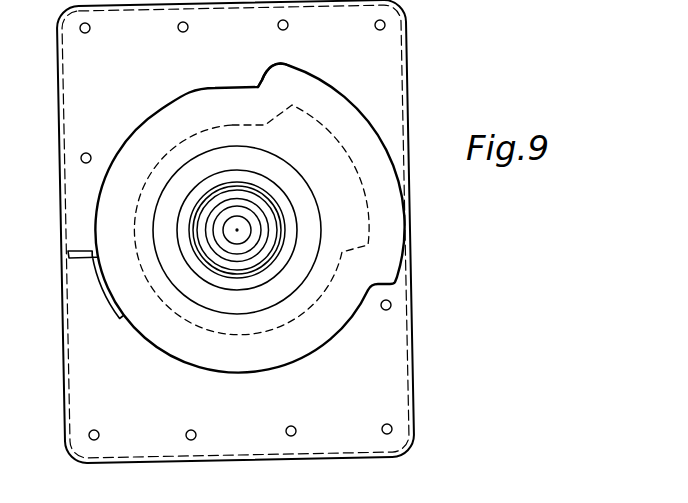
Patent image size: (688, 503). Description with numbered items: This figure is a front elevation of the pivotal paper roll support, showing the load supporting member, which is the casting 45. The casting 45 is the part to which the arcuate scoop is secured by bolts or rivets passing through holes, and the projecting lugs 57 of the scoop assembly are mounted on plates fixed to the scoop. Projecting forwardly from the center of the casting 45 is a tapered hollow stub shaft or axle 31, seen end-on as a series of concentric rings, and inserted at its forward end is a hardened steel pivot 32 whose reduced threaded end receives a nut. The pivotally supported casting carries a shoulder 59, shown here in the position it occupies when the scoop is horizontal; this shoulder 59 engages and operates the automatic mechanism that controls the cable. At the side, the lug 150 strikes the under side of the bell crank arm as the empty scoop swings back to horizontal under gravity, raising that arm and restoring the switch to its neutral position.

The casting 45 is at (397, 92).
The projecting lugs 57 is at (249, 218).
The shoulder 59 is at (267, 73).
The lug 150 is at (92, 270).
The tapered hollow stub shaft 31 is at (275, 230).
The hardened steel pivot 32 is at (245, 212).